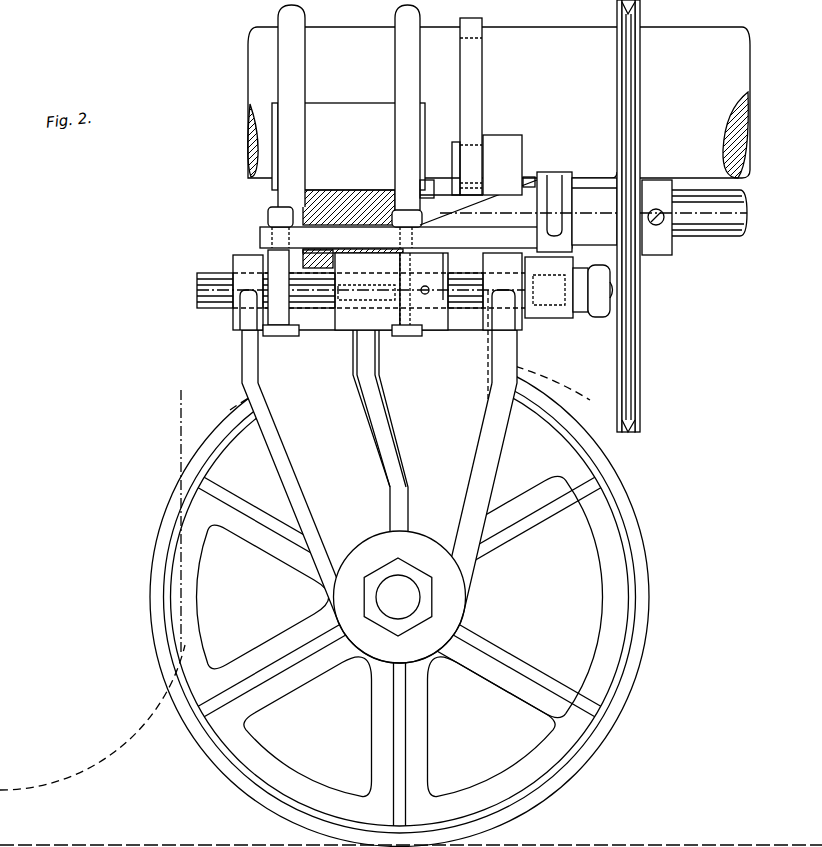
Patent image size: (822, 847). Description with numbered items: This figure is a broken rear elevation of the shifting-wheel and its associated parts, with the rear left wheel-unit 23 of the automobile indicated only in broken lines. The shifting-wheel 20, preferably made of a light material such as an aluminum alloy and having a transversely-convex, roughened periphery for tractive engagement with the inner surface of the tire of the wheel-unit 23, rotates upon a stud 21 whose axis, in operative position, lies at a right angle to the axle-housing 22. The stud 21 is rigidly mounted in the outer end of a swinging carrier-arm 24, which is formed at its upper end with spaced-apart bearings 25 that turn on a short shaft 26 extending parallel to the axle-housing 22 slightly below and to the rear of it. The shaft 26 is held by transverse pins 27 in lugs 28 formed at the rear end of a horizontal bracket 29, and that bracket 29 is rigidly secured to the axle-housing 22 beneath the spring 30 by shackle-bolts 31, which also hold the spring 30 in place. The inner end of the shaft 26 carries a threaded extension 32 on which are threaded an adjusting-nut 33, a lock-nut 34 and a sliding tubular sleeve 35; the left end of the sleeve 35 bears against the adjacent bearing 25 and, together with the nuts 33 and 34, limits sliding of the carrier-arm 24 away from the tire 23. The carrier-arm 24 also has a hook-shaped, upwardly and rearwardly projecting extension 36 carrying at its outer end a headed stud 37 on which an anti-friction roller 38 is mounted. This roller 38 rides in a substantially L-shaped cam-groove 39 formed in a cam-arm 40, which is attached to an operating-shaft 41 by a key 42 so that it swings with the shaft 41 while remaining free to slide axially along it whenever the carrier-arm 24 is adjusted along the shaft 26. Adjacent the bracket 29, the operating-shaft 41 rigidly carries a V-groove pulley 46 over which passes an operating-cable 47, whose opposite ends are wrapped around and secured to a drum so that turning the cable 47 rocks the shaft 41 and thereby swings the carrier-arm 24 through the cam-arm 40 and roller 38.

The shifting-wheel 20 is at (650, 600).
The stud 21 is at (376, 597).
The axle-housing 22 is at (698, 27).
The left rear wheel-unit 23 is at (136, 736).
The swinging carrier-arm 24 is at (243, 394).
The bearings 25 is at (238, 256).
The shaft 26 is at (203, 309).
The transverse pins 27 is at (428, 286).
The lugs 28 is at (292, 336).
The horizontal bracket 29 is at (267, 214).
The spring 30 is at (348, 190).
The shackle-bolts 31 is at (305, 18).
The threaded extension 32 is at (612, 290).
The adjusting-nut 33 is at (580, 312).
The lock-nut 34 is at (598, 317).
The sliding tubular sleeve 35 is at (550, 318).
The hook-shaped extension 36 is at (518, 134).
The headed stud 37 is at (452, 144).
The anti-friction roller 38 is at (482, 145).
The cam-groove 39 is at (471, 38).
The cam-arm 40 is at (484, 22).
The operating-shaft 41 is at (730, 226).
The key 42 is at (443, 206).
The V-groove pulley 46 is at (640, 392).
The operating-cable 47 is at (625, 432).